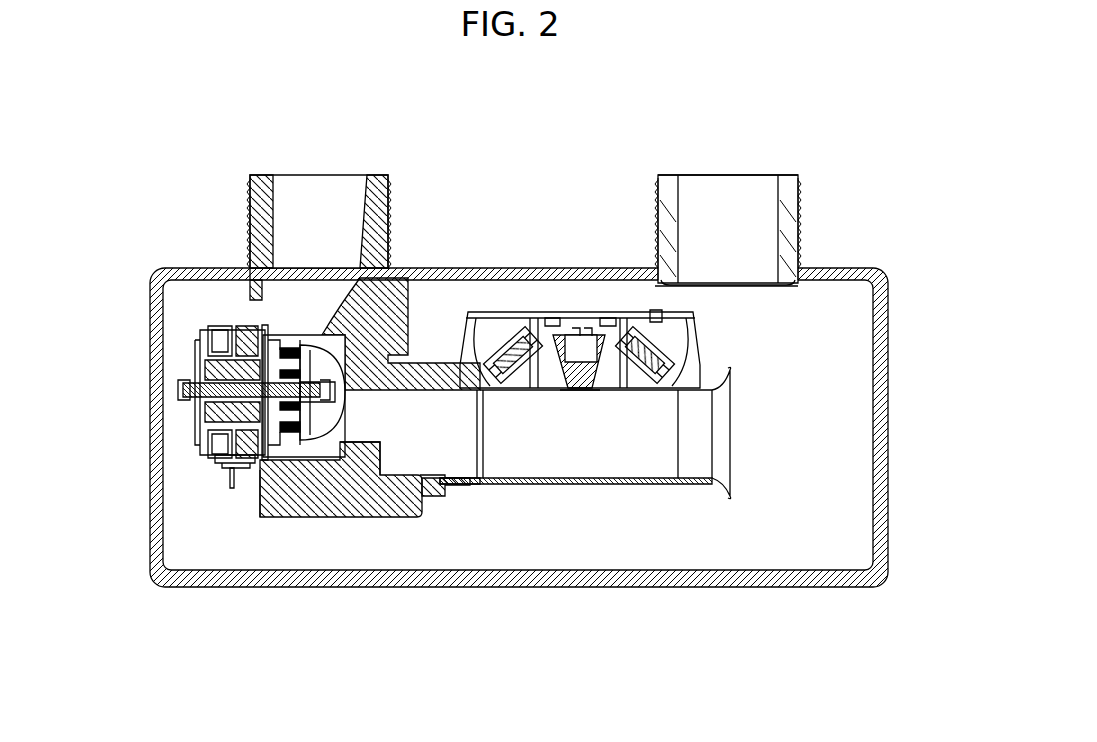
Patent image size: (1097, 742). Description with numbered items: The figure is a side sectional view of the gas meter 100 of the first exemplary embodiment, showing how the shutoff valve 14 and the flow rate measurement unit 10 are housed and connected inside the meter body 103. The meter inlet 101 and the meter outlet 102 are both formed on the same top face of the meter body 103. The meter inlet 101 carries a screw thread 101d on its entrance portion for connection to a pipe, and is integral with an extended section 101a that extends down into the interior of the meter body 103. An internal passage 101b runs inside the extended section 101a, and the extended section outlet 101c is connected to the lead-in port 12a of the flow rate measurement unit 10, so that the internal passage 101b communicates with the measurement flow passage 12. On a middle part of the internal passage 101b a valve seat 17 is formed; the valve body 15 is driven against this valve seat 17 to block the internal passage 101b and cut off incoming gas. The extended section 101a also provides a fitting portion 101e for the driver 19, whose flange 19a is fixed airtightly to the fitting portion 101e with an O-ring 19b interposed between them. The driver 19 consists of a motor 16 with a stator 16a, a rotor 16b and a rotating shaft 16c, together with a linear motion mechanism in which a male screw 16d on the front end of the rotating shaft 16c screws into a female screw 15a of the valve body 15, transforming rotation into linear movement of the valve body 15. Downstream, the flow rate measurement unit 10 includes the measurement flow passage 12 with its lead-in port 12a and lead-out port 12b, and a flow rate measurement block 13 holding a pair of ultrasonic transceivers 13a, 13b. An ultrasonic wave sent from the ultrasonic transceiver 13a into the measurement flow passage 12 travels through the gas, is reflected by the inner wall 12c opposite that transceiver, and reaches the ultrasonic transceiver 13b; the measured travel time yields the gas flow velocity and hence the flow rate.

The gas meter 100 is at (797, 168).
The meter inlet 101 is at (342, 252).
The extended section 101a is at (263, 498).
The internal passage 101b is at (390, 425).
The extended section outlet 101c is at (437, 497).
The screw thread 101d is at (250, 268).
The fitting portion 101e is at (262, 498).
The meter outlet 102 is at (800, 232).
The meter body 103 is at (900, 305).
The flow rate measurement unit 10 is at (606, 497).
The measurement flow passage 12 is at (699, 503).
The lead-in port 12a is at (457, 497).
The lead-out port 12b is at (728, 468).
The inner wall 12c is at (578, 473).
The flow rate measurement block 13 is at (579, 290).
The ultrasonic transceiver 13a is at (503, 330).
The ultrasonic transceiver 13b is at (653, 337).
The shutoff valve 14 is at (398, 518).
The valve body 15 is at (384, 290).
The female screw 15a is at (322, 335).
The motor 16 is at (156, 317).
The stator 16a is at (220, 338).
The rotor 16b is at (215, 370).
The rotating shaft 16c is at (210, 387).
The male screw 16d is at (258, 330).
The valve seat 17 is at (341, 462).
The driver 19 is at (183, 392).
The flange 19a is at (257, 470).
The O-ring 19b is at (260, 478).